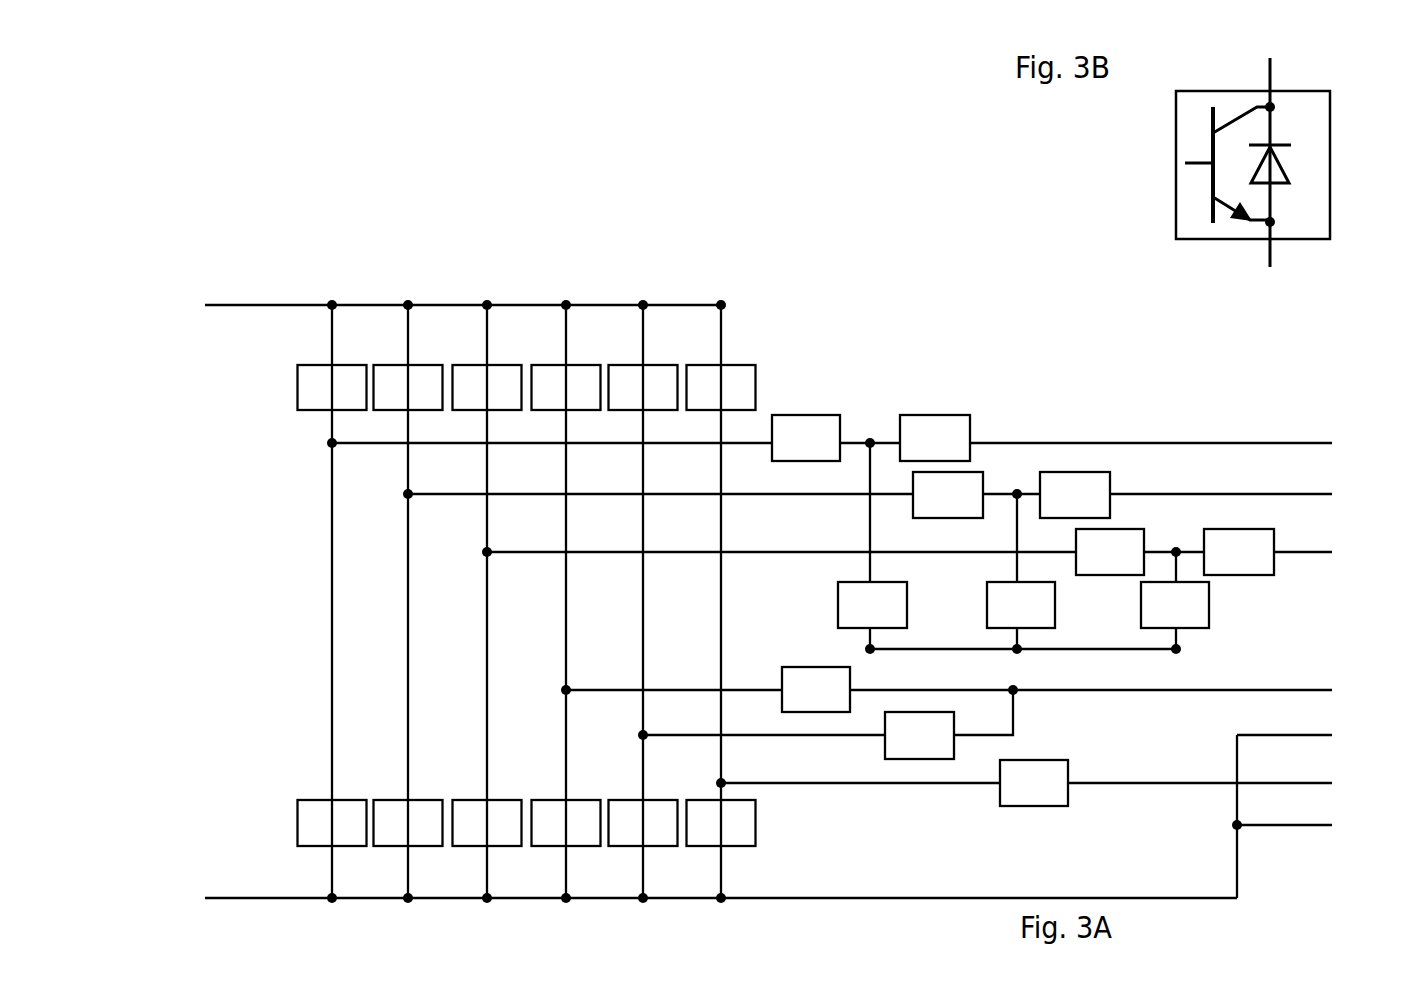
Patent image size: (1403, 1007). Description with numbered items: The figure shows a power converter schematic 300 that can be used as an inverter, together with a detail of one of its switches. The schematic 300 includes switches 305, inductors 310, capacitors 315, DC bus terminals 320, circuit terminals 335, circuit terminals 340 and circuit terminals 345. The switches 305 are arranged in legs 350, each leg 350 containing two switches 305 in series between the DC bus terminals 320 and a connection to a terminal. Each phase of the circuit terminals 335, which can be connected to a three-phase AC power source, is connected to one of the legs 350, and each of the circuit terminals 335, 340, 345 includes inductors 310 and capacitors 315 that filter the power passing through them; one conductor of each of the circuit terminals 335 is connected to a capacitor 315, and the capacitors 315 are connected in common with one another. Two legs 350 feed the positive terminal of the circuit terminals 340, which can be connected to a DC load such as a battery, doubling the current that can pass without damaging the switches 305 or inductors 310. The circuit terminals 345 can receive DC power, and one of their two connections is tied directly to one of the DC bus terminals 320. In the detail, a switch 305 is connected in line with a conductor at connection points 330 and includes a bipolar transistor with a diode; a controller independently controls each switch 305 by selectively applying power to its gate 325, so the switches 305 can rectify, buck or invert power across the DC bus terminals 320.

In FIG. 3A, the schematic 300 is at (825, 333).
In FIG. 3A, the switch 305 is at (527, 605).
In FIG. 3B, the switch 305 is at (1195, 91).
In FIG. 3A, the inductor 310 is at (1023, 610).
In FIG. 3A, the capacitor 315 is at (1023, 548).
In FIG. 3A, the DC bus terminals 320 is at (187, 303).
In FIG. 3B, the gate 325 is at (1185, 163).
In FIG. 3A, the connection points 330 is at (332, 351).
In FIG. 3B, the connection points 330 is at (1270, 58).
In FIG. 3A, the circuit terminals 335 is at (1340, 439).
In FIG. 3A, the circuit terminals 340 is at (1340, 685).
In FIG. 3A, the circuit terminals 345 is at (1340, 778).
In FIG. 3A, the leg 350 is at (487, 288).